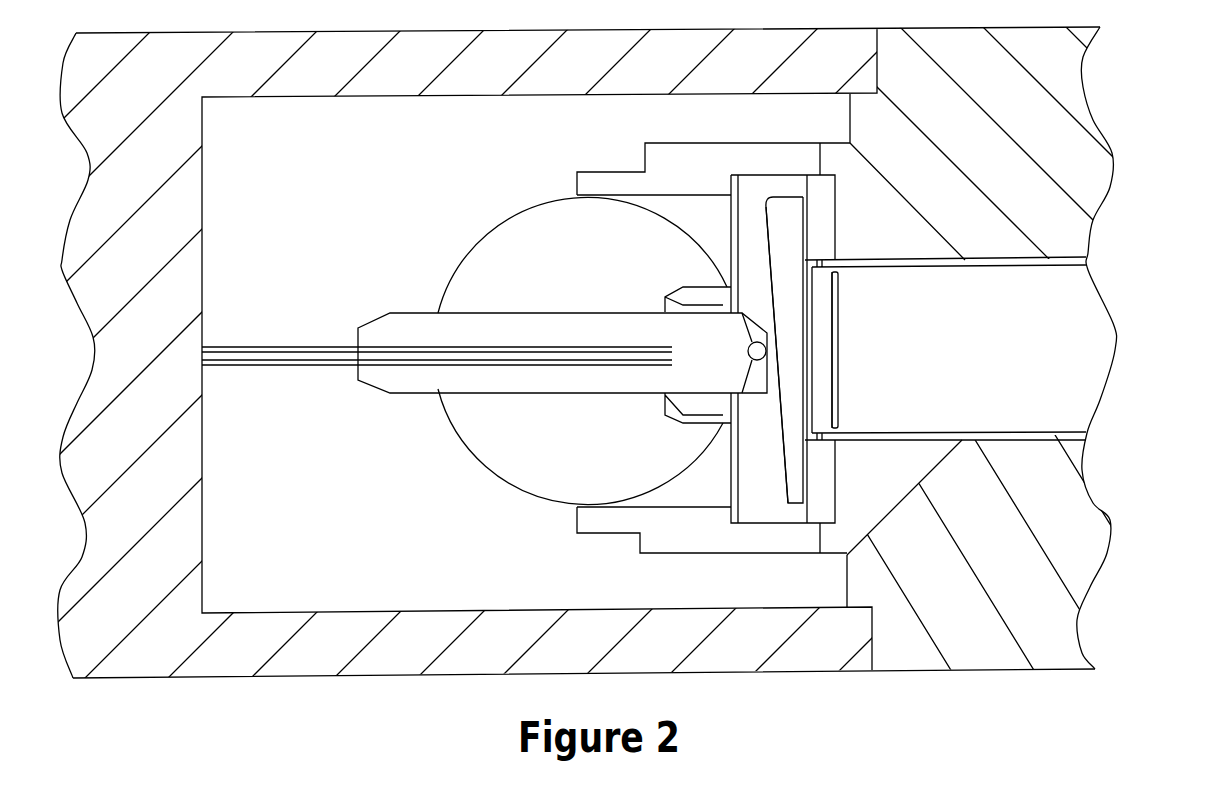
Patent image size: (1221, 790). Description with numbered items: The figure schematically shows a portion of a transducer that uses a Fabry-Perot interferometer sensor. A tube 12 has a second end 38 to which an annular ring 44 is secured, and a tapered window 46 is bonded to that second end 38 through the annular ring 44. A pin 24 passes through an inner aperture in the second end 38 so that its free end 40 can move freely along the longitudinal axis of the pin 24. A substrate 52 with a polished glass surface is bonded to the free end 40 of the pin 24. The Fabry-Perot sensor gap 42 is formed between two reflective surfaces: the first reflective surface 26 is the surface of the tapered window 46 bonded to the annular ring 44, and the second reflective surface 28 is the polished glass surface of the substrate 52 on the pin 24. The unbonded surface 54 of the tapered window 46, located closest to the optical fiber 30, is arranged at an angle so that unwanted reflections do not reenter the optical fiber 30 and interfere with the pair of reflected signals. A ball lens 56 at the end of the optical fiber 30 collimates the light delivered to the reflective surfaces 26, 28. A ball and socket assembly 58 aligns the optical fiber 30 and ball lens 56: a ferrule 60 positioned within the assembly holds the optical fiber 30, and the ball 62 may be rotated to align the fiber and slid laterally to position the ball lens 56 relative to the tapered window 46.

The tube 12 is at (1050, 605).
The pin 24 is at (1062, 395).
The first reflective surface 26 is at (812, 304).
The second reflective surface 28 is at (812, 316).
The optical fiber 30 is at (298, 352).
The second end 38 is at (842, 483).
The free end 40 is at (838, 352).
The Fabry-Perot sensor gap 42 is at (812, 388).
The annular ring 44 is at (817, 492).
The tapered window 46 is at (788, 270).
The substrate 52 is at (826, 333).
The unbonded surface 54 is at (786, 432).
The ball lens 56 is at (745, 357).
The ball and socket assembly 58 is at (500, 212).
The ferrule 60 is at (622, 375).
The ball 62 is at (495, 445).